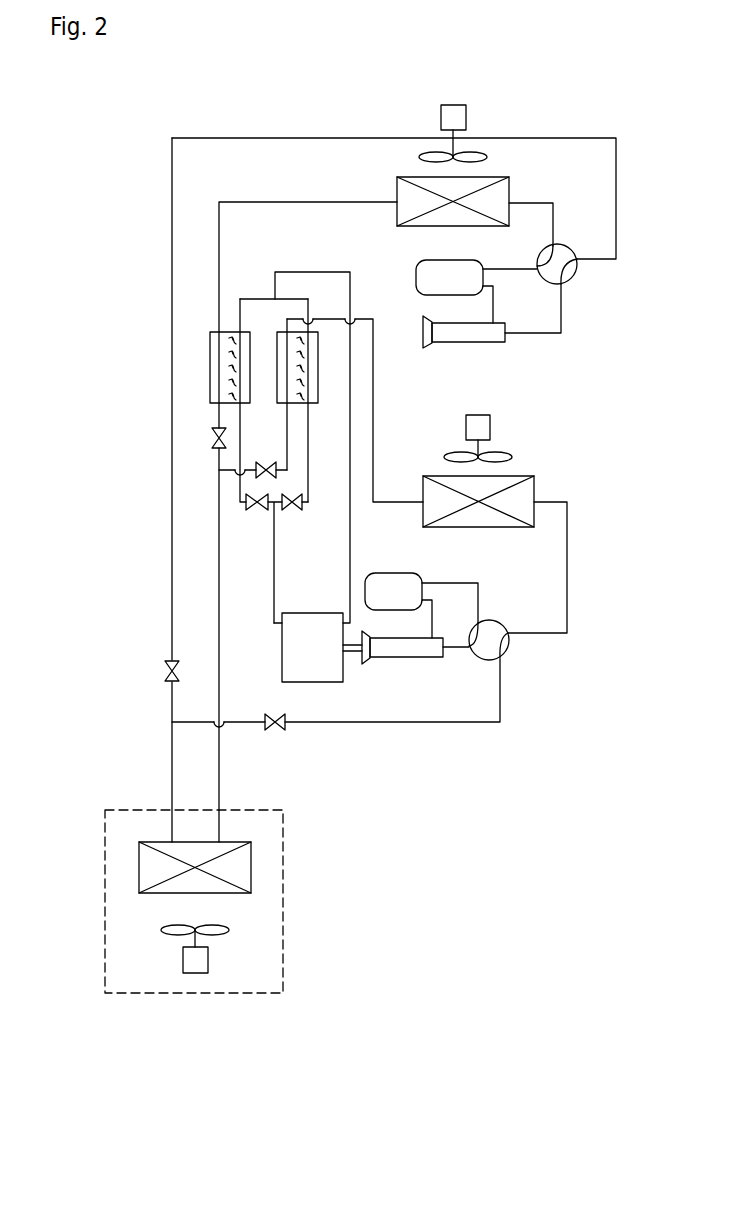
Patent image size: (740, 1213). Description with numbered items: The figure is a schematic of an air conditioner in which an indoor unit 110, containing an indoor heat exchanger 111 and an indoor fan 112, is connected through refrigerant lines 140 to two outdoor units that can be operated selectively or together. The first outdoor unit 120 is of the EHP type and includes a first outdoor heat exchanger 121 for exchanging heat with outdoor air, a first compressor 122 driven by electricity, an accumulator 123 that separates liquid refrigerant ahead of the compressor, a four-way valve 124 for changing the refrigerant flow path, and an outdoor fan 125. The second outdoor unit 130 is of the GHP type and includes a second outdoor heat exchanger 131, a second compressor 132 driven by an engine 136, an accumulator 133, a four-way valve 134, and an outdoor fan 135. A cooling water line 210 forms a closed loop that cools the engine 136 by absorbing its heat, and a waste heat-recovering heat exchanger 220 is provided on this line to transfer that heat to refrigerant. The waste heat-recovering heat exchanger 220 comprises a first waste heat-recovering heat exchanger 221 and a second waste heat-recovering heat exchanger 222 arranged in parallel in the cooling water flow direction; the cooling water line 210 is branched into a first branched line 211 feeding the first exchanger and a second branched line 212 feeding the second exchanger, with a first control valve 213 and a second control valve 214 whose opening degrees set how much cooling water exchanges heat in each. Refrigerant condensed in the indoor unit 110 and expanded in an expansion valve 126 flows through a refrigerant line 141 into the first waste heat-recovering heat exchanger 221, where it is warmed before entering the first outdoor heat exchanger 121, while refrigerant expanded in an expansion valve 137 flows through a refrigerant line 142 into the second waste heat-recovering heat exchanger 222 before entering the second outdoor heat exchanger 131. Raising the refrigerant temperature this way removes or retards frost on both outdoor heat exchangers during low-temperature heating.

The indoor unit 110 is at (317, 928).
The indoor heat exchanger 111 is at (243, 862).
The indoor fan 112 is at (198, 973).
The first outdoor unit 120 is at (548, 125).
The first outdoor heat exchanger 121 is at (510, 188).
The first compressor 122 is at (483, 342).
The accumulator 123 is at (452, 260).
The four-way valve 124 is at (575, 273).
The outdoor fan 125 is at (452, 103).
The expansion valve 126 is at (211, 438).
The second outdoor unit 130 is at (515, 675).
The second outdoor heat exchanger 131 is at (510, 476).
The second compressor 132 is at (392, 657).
The accumulator 133 is at (395, 573).
The four-way valve 134 is at (505, 647).
The outdoor fan 135 is at (466, 428).
The engine 136 is at (309, 682).
The expansion valve 137 is at (273, 464).
The refrigerant lines 140 is at (153, 218).
The refrigerant line 141 is at (217, 415).
The refrigerant line 142 is at (288, 420).
The cooling water line 210 is at (305, 267).
The first branched line 211 is at (240, 488).
The second branched line 212 is at (308, 463).
The first control valve 213 is at (258, 512).
The second control valve 214 is at (297, 512).
The waste heat-recovering heat exchanger 220 is at (184, 347).
The first waste heat-recovering heat exchanger 221 is at (210, 357).
The second waste heat-recovering heat exchanger 222 is at (284, 330).